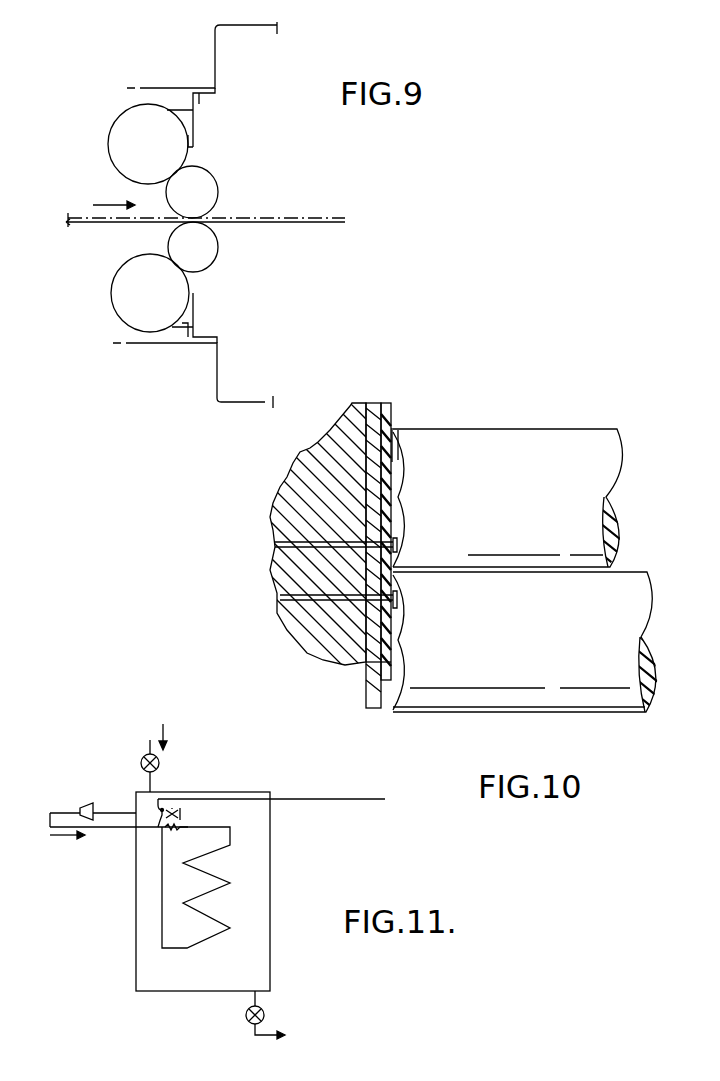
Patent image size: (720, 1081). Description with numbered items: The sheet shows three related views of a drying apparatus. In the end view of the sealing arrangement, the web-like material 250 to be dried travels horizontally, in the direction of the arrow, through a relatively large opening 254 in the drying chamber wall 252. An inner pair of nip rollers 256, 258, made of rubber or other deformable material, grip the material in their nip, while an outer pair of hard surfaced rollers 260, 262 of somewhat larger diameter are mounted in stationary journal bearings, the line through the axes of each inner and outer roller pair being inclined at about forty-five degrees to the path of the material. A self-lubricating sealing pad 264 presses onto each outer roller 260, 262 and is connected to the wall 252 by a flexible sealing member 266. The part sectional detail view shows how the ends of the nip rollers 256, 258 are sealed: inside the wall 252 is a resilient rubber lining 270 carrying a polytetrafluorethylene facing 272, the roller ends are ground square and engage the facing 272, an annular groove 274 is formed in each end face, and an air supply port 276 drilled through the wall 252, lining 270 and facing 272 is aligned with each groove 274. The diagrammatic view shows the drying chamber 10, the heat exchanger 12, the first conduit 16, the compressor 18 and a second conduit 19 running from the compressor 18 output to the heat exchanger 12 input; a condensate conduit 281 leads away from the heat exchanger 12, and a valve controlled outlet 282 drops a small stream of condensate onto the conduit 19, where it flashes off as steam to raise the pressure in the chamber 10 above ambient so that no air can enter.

In FIG. 9, the web-like material 250 is at (78, 218).
In FIG. 9, the drying chamber wall 252 is at (220, 380).
In FIG. 10, the drying chamber wall 252 is at (372, 665).
In FIG. 9, the opening 254 is at (167, 92).
In FIG. 9, the nip roller 256 is at (210, 194).
In FIG. 10, the nip roller 256 is at (573, 443).
In FIG. 9, the nip roller 258 is at (207, 255).
In FIG. 10, the nip roller 258 is at (497, 693).
In FIG. 9, the hard surfaced roller 260 is at (118, 132).
In FIG. 9, the hard surfaced roller 262 is at (122, 297).
In FIG. 9, the self-lubricating sealing pad 264 is at (192, 134).
In FIG. 9, the flexible sealing member 266 is at (201, 92).
In FIG. 10, the lining 270 is at (375, 418).
In FIG. 10, the facing 272 is at (393, 413).
In FIG. 10, the annular groove 274 is at (400, 556).
In FIG. 10, the air supply port 276 is at (270, 510).
In FIG. 11, the drying chamber 10 is at (270, 873).
In FIG. 11, the heat exchanger 12 is at (217, 935).
In FIG. 11, the first conduit 16 is at (110, 812).
In FIG. 11, the compressor 18 is at (85, 803).
In FIG. 11, the second conduit 19 is at (100, 828).
In FIG. 11, the condensate conduit 281 is at (310, 797).
In FIG. 11, the valve controlled outlet 282 is at (164, 810).